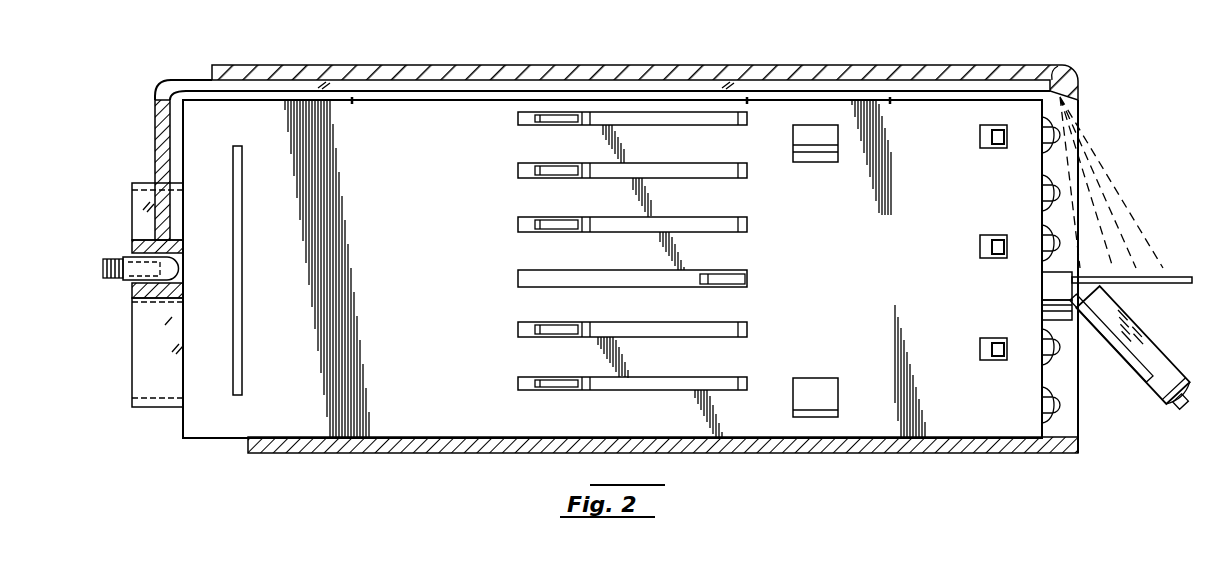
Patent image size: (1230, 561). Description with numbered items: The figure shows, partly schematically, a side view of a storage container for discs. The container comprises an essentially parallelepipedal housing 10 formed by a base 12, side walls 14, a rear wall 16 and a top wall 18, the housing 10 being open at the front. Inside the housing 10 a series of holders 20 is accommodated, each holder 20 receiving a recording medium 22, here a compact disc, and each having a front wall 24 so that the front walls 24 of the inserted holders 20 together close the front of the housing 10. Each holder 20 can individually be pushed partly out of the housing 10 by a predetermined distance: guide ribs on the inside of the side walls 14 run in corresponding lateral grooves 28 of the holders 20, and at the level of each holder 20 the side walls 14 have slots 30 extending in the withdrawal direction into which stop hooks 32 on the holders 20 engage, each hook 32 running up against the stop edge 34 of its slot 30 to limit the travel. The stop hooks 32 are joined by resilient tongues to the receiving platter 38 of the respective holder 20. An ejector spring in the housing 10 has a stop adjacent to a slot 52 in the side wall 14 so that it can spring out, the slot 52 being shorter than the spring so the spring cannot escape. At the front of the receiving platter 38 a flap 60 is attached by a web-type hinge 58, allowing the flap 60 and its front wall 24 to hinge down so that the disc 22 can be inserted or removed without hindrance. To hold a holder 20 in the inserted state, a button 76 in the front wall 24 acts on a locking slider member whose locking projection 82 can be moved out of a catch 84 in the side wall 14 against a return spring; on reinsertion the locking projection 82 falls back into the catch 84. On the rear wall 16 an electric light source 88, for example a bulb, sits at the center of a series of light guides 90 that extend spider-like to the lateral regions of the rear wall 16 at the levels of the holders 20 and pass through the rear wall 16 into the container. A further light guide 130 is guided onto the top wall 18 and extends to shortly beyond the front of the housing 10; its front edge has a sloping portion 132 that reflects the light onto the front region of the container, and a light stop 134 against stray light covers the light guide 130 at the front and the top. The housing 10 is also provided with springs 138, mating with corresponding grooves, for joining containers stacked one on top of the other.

The housing 10 is at (232, 446).
The base 12 is at (322, 446).
The side walls 14 is at (448, 420).
The rear wall 16 is at (182, 383).
The top wall 18 is at (503, 96).
The holders 20 is at (1070, 194).
The recording medium 22 is at (1172, 277).
The front wall 24 is at (1167, 408).
The lateral grooves 28 is at (1132, 356).
The slots 30 is at (692, 170).
The stop hooks 32 is at (550, 172).
The stop edge 34 is at (745, 224).
The receiving platter 38 is at (1044, 286).
The slot 52 is at (238, 265).
The web-type hinge 58 is at (1044, 311).
The flap 60 is at (1160, 350).
The button 76 is at (1058, 136).
The locking projection 82 is at (998, 147).
The catch 84 is at (980, 136).
The electric light source 88 is at (113, 279).
The light guides 90 is at (140, 222).
The light guide 130 is at (156, 117).
The sloping portion 132 is at (1062, 75).
The light stop 134 is at (718, 73).
The springs 138 is at (435, 96).